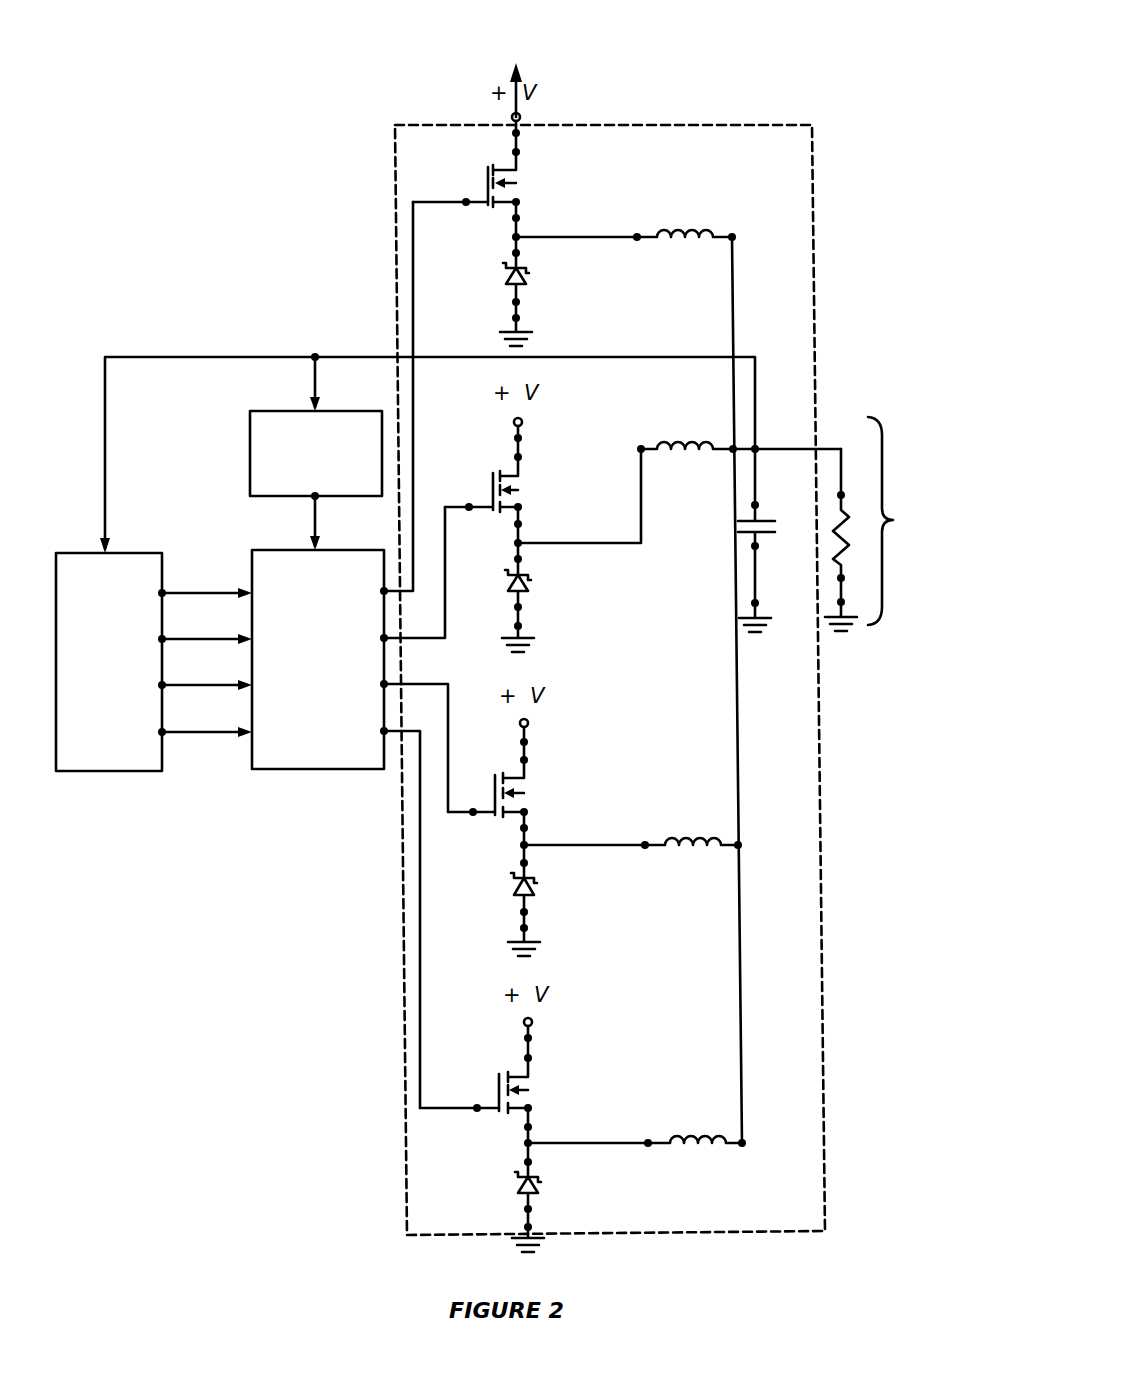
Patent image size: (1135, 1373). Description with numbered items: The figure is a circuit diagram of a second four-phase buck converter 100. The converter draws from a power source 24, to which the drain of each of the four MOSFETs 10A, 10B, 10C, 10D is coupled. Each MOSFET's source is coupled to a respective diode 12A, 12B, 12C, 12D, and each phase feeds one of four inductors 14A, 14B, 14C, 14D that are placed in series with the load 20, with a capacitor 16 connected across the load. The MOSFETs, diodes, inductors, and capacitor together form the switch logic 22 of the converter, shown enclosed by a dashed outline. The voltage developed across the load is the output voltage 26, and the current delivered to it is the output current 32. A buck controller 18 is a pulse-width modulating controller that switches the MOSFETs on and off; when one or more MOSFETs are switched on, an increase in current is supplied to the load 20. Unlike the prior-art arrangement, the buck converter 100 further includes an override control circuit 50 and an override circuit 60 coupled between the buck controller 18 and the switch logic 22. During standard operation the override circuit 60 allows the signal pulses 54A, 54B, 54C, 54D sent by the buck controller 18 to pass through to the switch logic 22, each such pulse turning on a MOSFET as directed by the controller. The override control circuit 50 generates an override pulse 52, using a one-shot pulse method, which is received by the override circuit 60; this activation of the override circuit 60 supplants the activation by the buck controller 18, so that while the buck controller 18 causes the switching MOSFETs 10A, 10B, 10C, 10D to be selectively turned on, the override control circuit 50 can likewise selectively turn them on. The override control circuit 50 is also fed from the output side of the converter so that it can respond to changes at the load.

The buck converter 100 is at (226, 184).
The power source 24 is at (513, 62).
The switch logic 22 is at (770, 1220).
The buck controller 18 is at (142, 553).
The override control circuit 50 is at (276, 411).
The override pulse 52 is at (312, 529).
The override circuit 60 is at (278, 771).
The signal pulse 54A is at (172, 596).
The signal pulse 54B is at (172, 642).
The signal pulse 54C is at (172, 688).
The signal pulse 54D is at (172, 735).
The MOSFET 10A is at (518, 176).
The MOSFET 10B is at (522, 481).
The MOSFET 10C is at (526, 784).
The MOSFET 10D is at (530, 1082).
The diode 12A is at (530, 273).
The diode 12B is at (532, 580).
The diode 12C is at (538, 885).
The diode 12D is at (542, 1180).
The inductor 14A is at (678, 225).
The inductor 14B is at (680, 437).
The inductor 14C is at (685, 832).
The inductor 14D is at (688, 1130).
The capacitor 16 is at (760, 518).
The load 20 is at (834, 530).
The output voltage 26 is at (897, 521).
The output current 32 is at (820, 447).